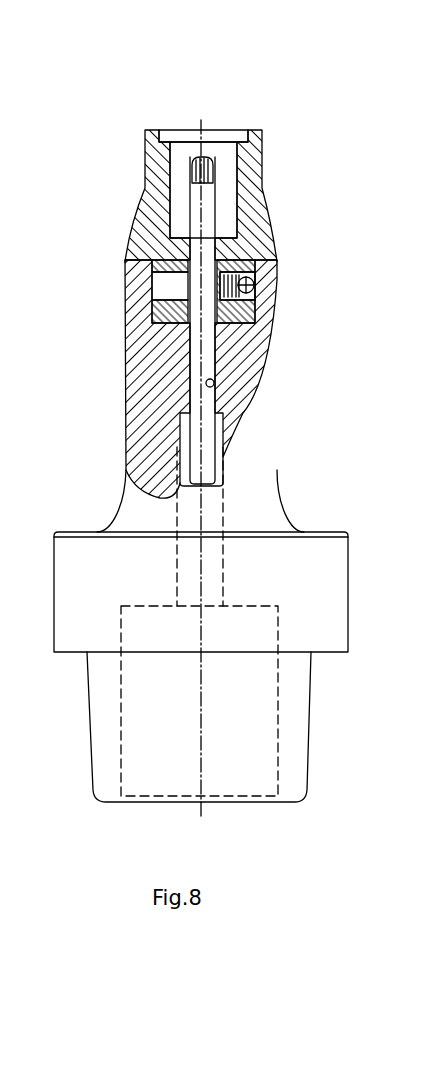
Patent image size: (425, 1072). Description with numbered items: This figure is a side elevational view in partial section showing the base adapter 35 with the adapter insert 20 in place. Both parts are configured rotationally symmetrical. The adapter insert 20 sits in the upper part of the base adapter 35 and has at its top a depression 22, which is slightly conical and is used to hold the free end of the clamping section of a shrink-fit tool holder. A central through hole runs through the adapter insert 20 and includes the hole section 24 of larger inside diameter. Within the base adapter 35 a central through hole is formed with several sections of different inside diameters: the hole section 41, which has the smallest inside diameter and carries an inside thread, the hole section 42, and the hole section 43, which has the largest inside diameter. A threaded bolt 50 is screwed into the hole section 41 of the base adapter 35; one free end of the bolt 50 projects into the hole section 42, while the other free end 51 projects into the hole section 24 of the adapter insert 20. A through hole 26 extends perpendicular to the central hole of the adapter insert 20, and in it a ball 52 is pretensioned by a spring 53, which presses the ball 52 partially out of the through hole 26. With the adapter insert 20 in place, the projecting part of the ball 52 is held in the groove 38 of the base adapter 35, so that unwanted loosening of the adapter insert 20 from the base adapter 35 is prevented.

The adapter insert 20 is at (134, 190).
The depression 22 is at (168, 132).
The hole section 24 is at (232, 197).
The through hole 26 is at (173, 284).
The base adapter 35 is at (104, 476).
The groove 38 is at (254, 290).
The hole section 41 is at (210, 395).
The hole section 42 is at (215, 512).
The hole section 43 is at (278, 750).
The threaded bolt 50 is at (205, 349).
The free end 51 is at (214, 160).
The ball 52 is at (250, 283).
The spring 53 is at (236, 276).